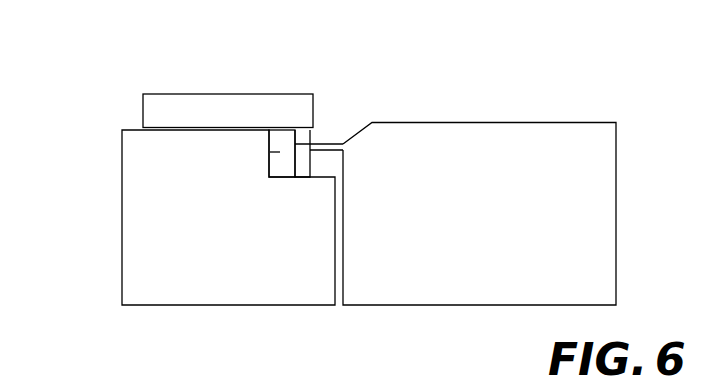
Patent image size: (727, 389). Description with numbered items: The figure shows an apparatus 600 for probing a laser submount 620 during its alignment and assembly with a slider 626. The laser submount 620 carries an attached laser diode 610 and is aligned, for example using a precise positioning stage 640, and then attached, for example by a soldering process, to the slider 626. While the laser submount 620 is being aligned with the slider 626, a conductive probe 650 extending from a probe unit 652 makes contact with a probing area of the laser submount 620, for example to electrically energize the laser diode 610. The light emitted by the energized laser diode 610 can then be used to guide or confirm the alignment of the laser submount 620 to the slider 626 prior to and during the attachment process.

The apparatus 600 is at (120, 68).
The laser diode 610 is at (312, 137).
The laser submount 620 is at (280, 152).
The slider 626 is at (217, 110).
The positioning stage 640 is at (158, 290).
The conductive probe 650 is at (330, 141).
The probe unit 652 is at (497, 140).